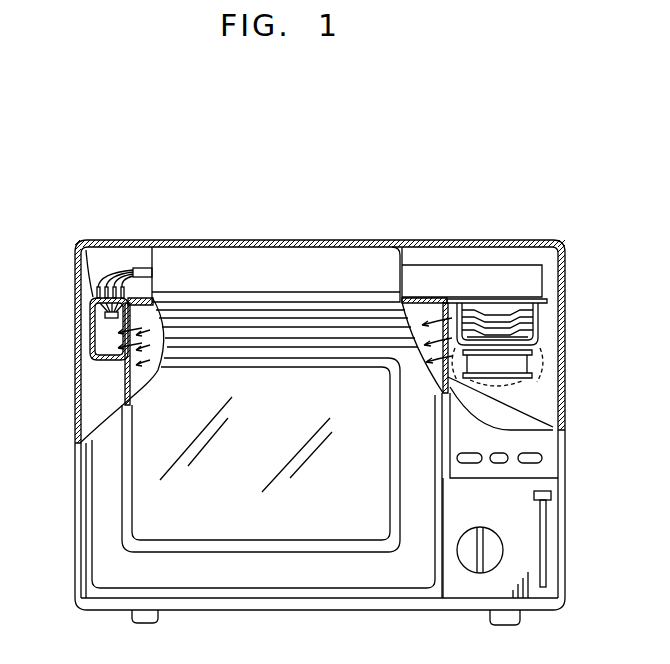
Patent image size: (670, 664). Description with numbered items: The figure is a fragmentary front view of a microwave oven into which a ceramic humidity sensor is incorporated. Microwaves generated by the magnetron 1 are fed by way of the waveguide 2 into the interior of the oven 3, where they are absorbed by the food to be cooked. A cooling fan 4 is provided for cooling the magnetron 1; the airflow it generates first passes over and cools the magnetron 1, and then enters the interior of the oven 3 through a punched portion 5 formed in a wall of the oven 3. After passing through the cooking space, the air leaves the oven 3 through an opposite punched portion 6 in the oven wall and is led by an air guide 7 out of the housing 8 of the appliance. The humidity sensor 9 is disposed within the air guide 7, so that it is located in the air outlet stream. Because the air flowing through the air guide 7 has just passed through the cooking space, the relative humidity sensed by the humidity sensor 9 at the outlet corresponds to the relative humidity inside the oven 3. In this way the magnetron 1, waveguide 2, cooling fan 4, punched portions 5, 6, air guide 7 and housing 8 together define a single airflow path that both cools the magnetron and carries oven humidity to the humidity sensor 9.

The magnetron 1 is at (538, 318).
The waveguide 2 is at (470, 280).
The oven 3 is at (422, 298).
The cooling fan 4 is at (535, 360).
The punched portion 5 is at (553, 427).
The opposite punched portion 6 is at (80, 437).
The air guide 7 is at (85, 241).
The housing 8 is at (265, 243).
The humidity sensor 9 is at (112, 318).